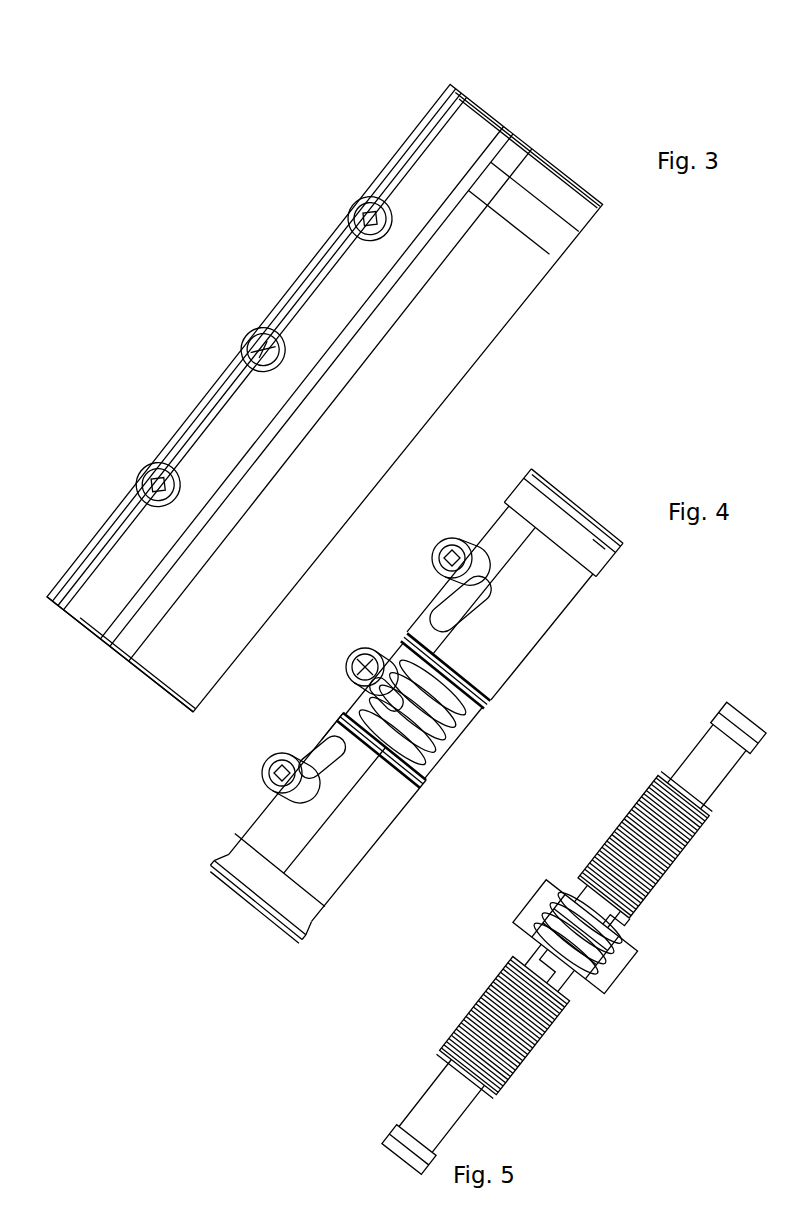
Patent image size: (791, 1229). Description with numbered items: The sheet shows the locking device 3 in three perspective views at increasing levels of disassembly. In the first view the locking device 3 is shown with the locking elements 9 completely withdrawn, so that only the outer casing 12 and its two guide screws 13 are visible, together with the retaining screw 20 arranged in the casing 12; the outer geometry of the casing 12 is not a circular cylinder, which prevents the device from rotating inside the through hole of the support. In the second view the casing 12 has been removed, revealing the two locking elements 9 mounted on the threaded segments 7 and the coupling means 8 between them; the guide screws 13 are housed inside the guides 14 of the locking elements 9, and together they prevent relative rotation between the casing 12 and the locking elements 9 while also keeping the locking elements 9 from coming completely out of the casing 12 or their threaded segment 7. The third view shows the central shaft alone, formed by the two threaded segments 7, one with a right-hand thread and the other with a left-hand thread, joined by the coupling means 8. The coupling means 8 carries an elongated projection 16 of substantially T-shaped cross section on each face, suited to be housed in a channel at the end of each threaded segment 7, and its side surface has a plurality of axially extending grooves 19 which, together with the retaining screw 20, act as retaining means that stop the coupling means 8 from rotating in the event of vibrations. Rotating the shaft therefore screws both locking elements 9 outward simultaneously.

In FIG. 3, the locking device 3 is at (182, 665).
In FIG. 5, the threaded segment 7 is at (695, 848).
In FIG. 4, the coupling means 8 is at (475, 730).
In FIG. 5, the coupling means 8 is at (623, 963).
In FIG. 4, the locking element 9 is at (523, 623).
In FIG. 3, the casing 12 is at (497, 308).
In FIG. 3, the guide screw 13 is at (367, 205).
In FIG. 4, the guide screw 13 is at (448, 537).
In FIG. 4, the guide 14 is at (337, 727).
In FIG. 5, the elongated projection 16 is at (620, 925).
In FIG. 4, the grooves 19 is at (430, 768).
In FIG. 3, the retaining screw 20 is at (250, 338).
In FIG. 4, the retaining screw 20 is at (366, 648).